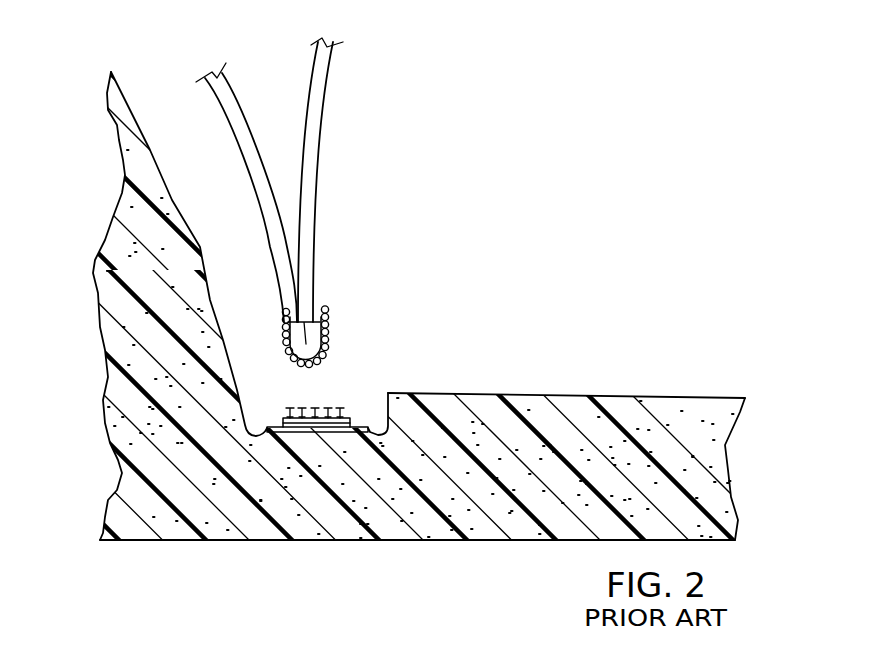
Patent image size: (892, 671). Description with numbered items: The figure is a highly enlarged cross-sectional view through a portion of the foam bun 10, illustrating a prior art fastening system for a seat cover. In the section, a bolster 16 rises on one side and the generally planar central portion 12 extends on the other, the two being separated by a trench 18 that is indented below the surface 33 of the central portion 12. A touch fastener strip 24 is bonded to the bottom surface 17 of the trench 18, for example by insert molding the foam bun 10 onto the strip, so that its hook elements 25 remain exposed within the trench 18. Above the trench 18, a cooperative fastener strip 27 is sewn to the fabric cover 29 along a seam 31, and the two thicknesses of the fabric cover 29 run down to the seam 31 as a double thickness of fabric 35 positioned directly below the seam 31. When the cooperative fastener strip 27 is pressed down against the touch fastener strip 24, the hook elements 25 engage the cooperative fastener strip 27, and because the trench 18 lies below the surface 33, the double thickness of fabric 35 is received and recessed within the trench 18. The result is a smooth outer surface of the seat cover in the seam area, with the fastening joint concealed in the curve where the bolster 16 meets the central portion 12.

The foam bun 10 is at (463, 232).
The central portion 12 is at (594, 414).
The bolster 16 is at (169, 306).
The bottom surface 17 is at (308, 432).
The trench 18 is at (261, 380).
The touch fastener strip 24 is at (360, 401).
The hook elements 25 is at (305, 406).
The cooperative fastener strip 27 is at (329, 330).
The fabric cover 29 is at (312, 148).
The seam 31 is at (313, 304).
The surface 33 is at (487, 393).
The double thickness of fabric 35 is at (303, 343).